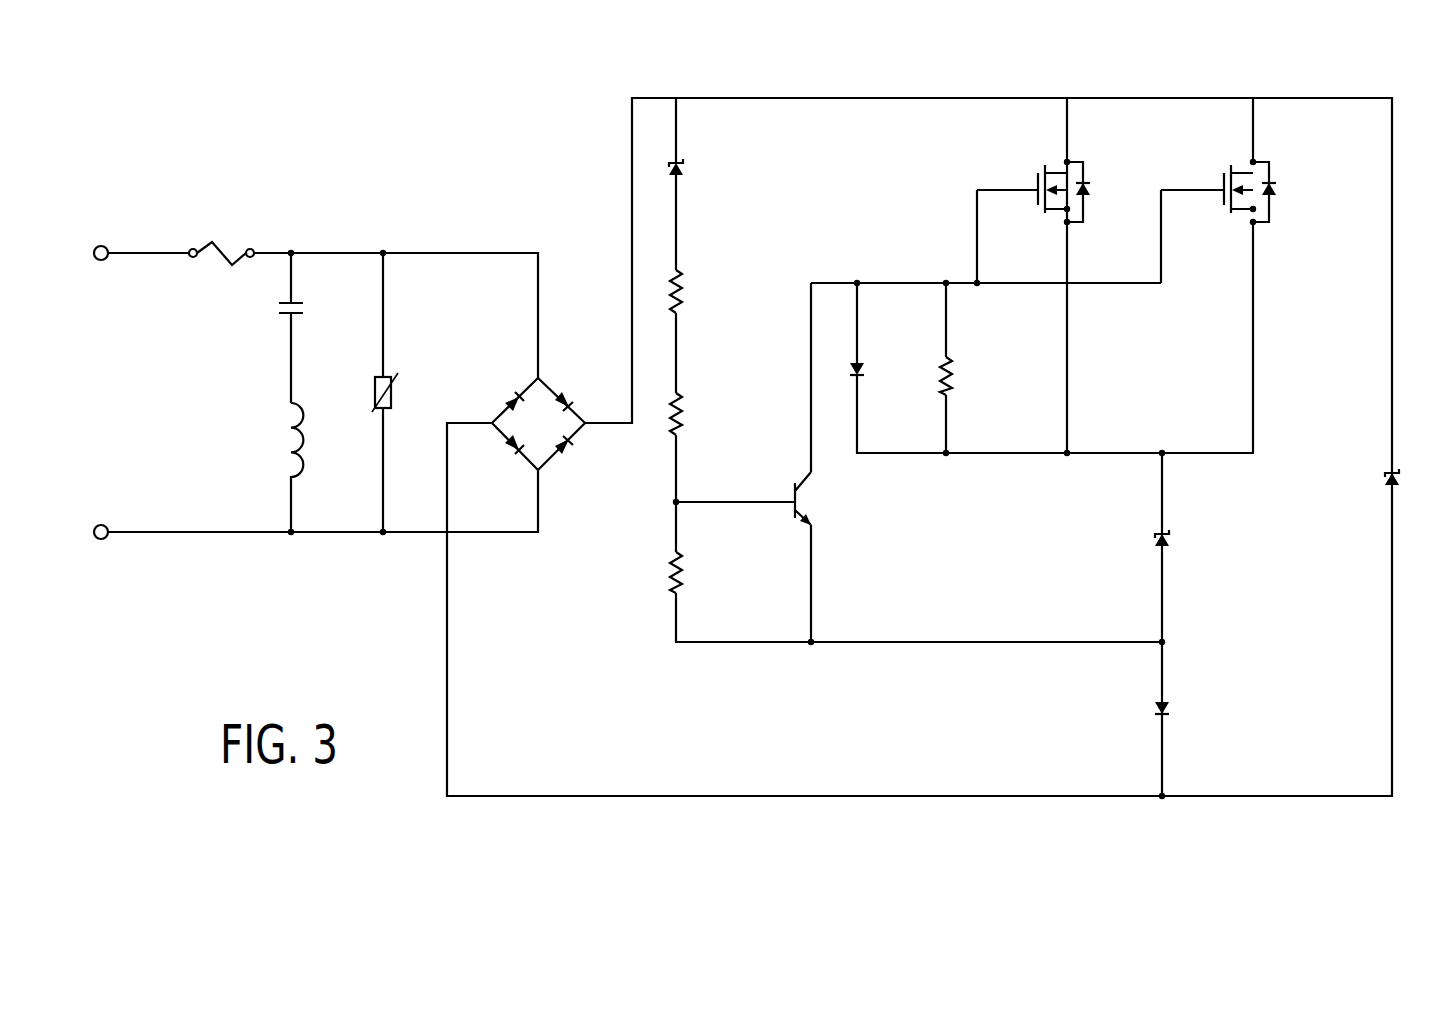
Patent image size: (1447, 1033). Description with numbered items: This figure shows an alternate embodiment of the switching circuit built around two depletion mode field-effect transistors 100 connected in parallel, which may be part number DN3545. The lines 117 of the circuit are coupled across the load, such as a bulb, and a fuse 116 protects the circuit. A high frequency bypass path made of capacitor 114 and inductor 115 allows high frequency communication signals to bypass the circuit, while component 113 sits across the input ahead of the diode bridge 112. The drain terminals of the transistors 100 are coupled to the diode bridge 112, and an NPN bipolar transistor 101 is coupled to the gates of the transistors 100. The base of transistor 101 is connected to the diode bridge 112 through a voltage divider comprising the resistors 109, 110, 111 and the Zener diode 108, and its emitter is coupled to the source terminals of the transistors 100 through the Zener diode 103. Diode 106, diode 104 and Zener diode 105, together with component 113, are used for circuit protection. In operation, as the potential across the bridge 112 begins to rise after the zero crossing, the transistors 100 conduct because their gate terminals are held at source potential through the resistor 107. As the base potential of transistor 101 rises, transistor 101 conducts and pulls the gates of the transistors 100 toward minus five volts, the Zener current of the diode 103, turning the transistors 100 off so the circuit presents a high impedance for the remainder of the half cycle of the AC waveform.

The depletion mode field-effect transistors 100 is at (1098, 190).
The NPN bipolar transistor 101 is at (817, 505).
The Zener diode 103 is at (1175, 538).
The diode 104 is at (1175, 707).
The Zener diode 105 is at (1402, 477).
The diode 106 is at (870, 370).
The resistor 107 is at (962, 375).
The Zener diode 108 is at (688, 165).
The resistor 109 is at (688, 290).
The resistor 110 is at (690, 413).
The resistor 111 is at (690, 570).
The diode bridge 112 is at (538, 415).
The component 113 is at (398, 390).
The capacitor 114 is at (308, 308).
The inductor 115 is at (308, 438).
The fuse 116 is at (223, 245).
The lines 117 is at (103, 262).